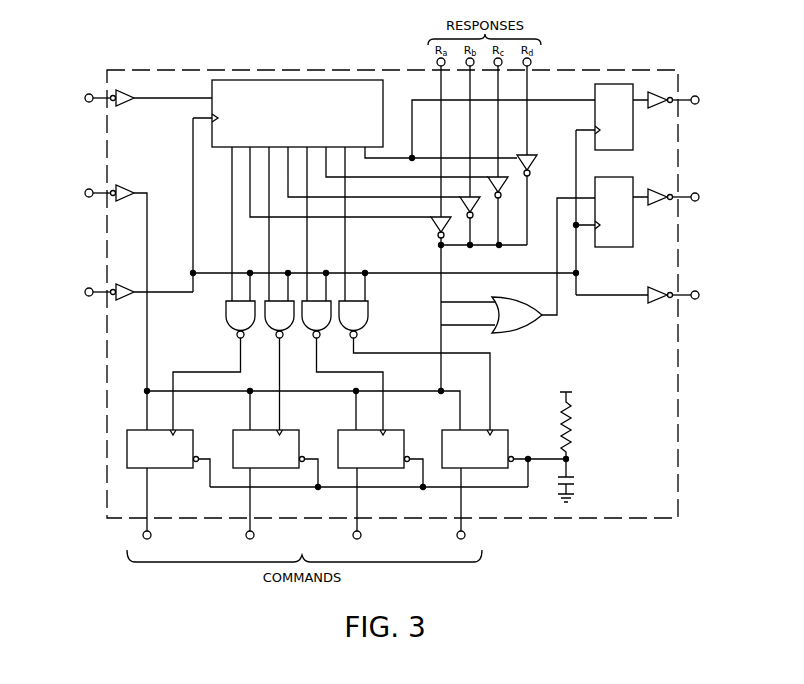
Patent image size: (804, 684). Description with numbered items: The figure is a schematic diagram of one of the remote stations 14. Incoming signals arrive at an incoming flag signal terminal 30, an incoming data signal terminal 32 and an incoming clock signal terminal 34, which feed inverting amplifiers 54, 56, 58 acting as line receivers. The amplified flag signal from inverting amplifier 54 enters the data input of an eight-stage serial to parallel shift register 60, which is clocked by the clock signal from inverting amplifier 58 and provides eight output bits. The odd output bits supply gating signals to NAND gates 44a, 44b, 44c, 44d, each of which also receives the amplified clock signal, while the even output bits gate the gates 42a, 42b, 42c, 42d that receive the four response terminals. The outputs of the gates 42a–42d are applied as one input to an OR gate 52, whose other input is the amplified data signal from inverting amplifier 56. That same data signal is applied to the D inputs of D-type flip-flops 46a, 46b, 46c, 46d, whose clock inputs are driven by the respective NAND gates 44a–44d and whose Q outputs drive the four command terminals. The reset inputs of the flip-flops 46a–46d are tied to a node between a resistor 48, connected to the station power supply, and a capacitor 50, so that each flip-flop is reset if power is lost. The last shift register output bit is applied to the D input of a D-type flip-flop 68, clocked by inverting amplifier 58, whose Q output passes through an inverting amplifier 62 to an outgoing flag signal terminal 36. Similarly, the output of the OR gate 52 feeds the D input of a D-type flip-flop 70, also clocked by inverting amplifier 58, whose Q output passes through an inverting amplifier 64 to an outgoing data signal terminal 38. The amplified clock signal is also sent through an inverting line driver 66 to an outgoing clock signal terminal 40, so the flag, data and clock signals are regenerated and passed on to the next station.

The remote station 14 is at (232, 70).
The incoming flag signal terminal 30 is at (86, 94).
The incoming data signal terminal 32 is at (86, 189).
The incoming clock signal terminal 34 is at (86, 288).
The outgoing flag signal terminal 36 is at (695, 104).
The outgoing data signal terminal 38 is at (696, 201).
The outgoing clock signal terminal 40 is at (696, 299).
The gate 42a is at (435, 228).
The gate 42b is at (478, 208).
The gate 42c is at (506, 188).
The gate 42d is at (532, 160).
The NAND gate 44a is at (224, 312).
The NAND gate 44b is at (268, 318).
The NAND gate 44c is at (320, 322).
The NAND gate 44d is at (365, 312).
The D-type flip-flop 46a is at (188, 430).
The D-type flip-flop 46b is at (295, 430).
The D-type flip-flop 46c is at (401, 430).
The D-type flip-flop 46d is at (505, 430).
The resistor 48 is at (572, 412).
The capacitor 50 is at (571, 472).
The OR gate 52 is at (502, 323).
The inverting amplifier 54 is at (128, 101).
The inverting amplifier 56 is at (125, 188).
The inverting amplifier 58 is at (128, 300).
The eight-stage serial to parallel shift register 60 is at (290, 108).
The inverting amplifier 62 is at (658, 107).
The inverting amplifier 64 is at (658, 204).
The inverting line driver 66 is at (658, 302).
The D-type flip-flop 68 is at (628, 150).
The D-type flip-flop 70 is at (616, 247).